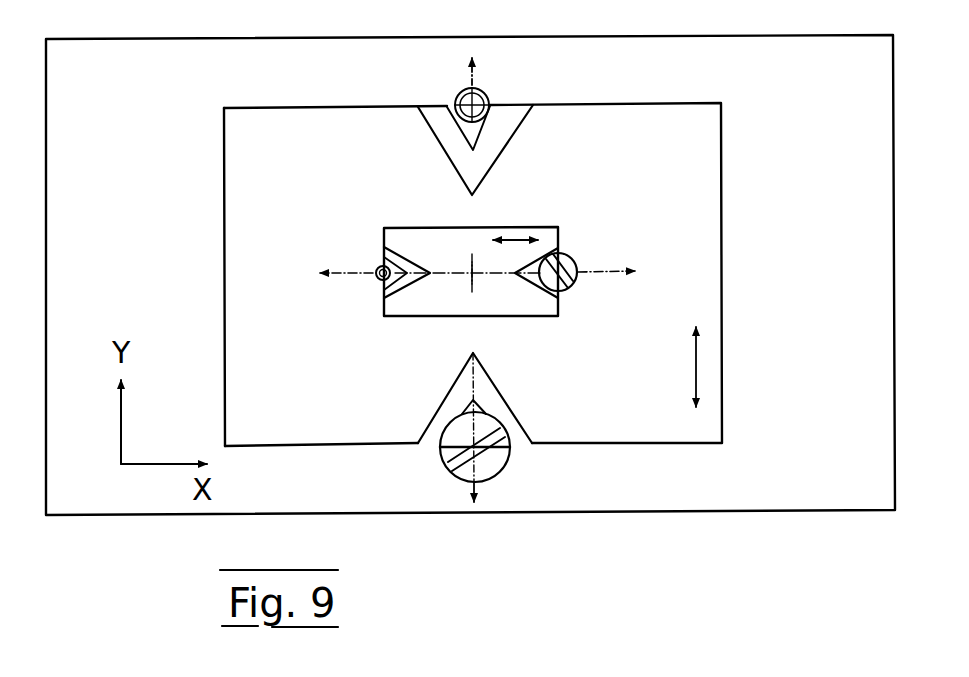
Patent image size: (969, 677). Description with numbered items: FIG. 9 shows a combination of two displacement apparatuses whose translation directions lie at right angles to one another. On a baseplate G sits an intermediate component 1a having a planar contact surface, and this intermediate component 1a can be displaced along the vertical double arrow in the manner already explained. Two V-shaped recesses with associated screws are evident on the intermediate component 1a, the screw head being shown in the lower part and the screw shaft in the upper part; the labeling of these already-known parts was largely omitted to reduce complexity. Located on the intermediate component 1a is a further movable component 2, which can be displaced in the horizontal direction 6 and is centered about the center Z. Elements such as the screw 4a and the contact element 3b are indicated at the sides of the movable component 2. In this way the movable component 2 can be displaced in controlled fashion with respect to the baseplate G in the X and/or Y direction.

The intermediate component 1a is at (308, 426).
The movable component 2 is at (508, 315).
The clamping roller 3b is at (566, 263).
The centering pin 4a is at (379, 269).
The horizontal direction 6 is at (508, 240).
The center Z is at (470, 278).
The baseplate G is at (840, 492).